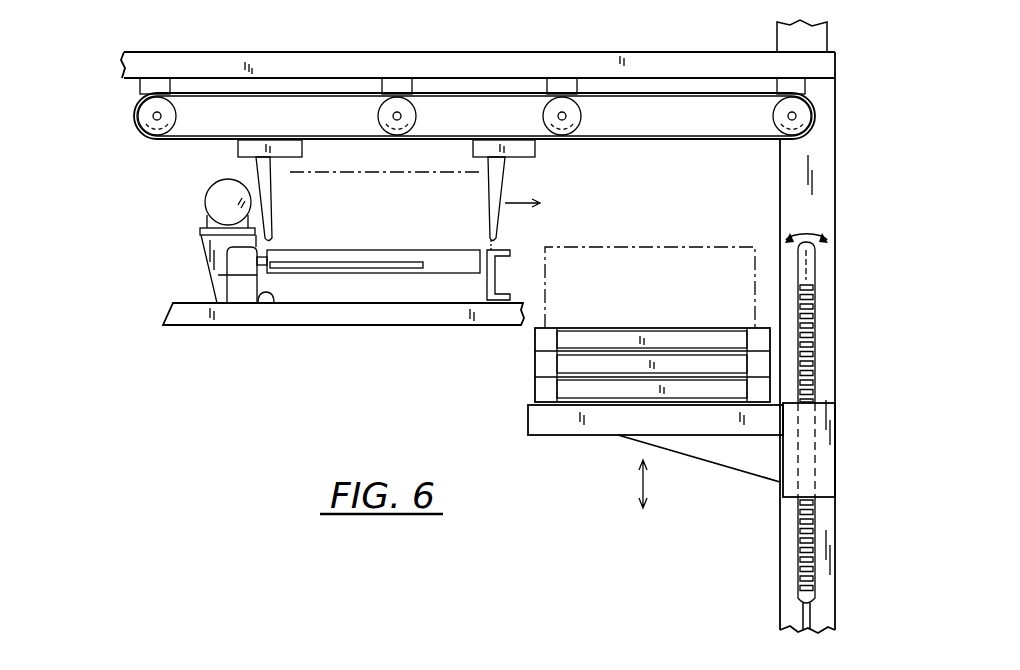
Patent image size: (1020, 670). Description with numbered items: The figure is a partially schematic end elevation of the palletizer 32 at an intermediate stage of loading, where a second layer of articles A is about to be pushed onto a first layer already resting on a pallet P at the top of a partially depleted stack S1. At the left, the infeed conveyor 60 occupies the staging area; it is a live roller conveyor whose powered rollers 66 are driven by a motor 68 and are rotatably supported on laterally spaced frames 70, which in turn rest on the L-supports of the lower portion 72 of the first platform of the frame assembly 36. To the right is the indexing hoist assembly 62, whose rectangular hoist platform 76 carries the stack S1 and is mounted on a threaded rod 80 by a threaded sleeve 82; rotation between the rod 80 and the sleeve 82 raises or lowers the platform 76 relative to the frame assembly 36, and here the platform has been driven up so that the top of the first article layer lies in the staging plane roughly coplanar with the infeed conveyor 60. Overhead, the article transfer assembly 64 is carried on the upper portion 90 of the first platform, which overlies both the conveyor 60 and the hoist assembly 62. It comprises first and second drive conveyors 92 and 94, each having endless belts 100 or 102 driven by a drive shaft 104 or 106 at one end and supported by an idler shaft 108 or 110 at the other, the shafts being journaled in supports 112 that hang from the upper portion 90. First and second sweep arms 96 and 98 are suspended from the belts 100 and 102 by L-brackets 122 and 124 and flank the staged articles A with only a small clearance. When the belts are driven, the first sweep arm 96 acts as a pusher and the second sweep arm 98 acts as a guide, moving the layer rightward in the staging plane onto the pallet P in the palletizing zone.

The palletizer 32 is at (122, 182).
The frame assembly 36 is at (840, 318).
The infeed conveyor 60 is at (360, 285).
The indexing hoist assembly 62 is at (738, 480).
The article transfer assembly 64 is at (660, 76).
The powered rollers 66 is at (423, 268).
The motor 68 is at (214, 203).
The frames 70 is at (270, 302).
The lower portion of the first platform 72 is at (182, 325).
The hoist platform 76 is at (538, 428).
The threaded rods 80 is at (808, 272).
The threaded sleeves 82 is at (825, 445).
The upper portion of the first platform 90 is at (247, 60).
The first drive conveyor 92 is at (414, 105).
The second drive conveyor 94 is at (818, 101).
The first sweep arm 96 is at (258, 175).
The second sweep arm 98 is at (498, 192).
The endless belts 100 is at (308, 92).
The endless belts 102 is at (702, 104).
The drive shaft 104 is at (565, 113).
The drive shaft 106 is at (797, 116).
The idler shaft 108 is at (153, 118).
The idler shaft 110 is at (398, 112).
The supports 112 is at (155, 88).
The L-bracket 122 is at (238, 147).
The L-bracket 124 is at (535, 150).
The pallet P is at (545, 364).
The stack S1 is at (545, 392).
The articles A is at (362, 172).